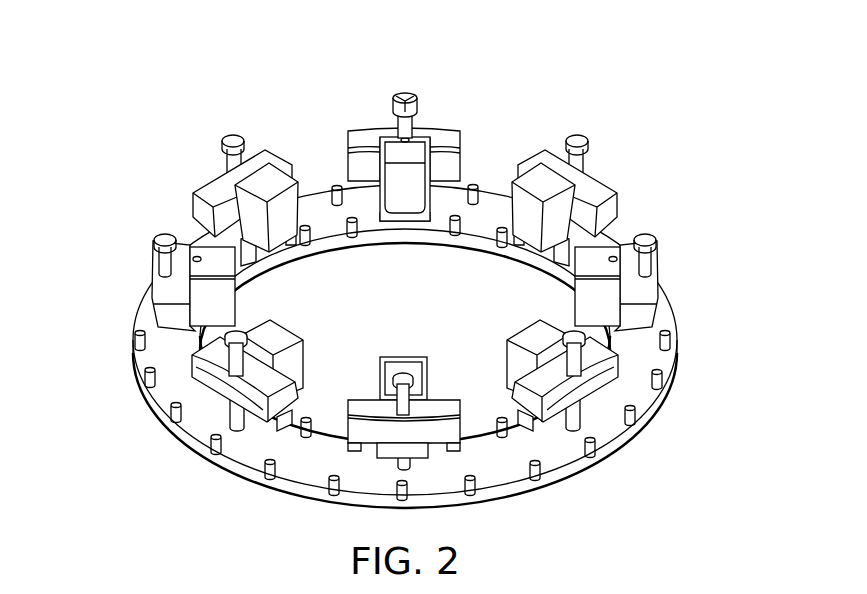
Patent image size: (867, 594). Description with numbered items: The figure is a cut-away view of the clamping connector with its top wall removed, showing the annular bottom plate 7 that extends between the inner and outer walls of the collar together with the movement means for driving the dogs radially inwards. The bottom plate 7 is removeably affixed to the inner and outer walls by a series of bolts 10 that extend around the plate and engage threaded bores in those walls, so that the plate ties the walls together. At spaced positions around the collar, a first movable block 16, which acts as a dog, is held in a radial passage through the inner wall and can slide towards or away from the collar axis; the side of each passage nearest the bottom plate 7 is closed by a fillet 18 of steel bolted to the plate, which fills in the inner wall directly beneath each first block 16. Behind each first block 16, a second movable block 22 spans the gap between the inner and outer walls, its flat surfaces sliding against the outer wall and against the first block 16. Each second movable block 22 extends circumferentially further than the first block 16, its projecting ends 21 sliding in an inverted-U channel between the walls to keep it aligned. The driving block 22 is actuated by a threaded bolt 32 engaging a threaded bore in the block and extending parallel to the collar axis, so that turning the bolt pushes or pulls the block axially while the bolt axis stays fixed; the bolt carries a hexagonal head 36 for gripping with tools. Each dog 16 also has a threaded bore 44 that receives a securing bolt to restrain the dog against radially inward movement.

The bottom plate 7 is at (662, 358).
The bolts 10 is at (460, 218).
The first movable block 16 is at (385, 195).
The fillet 18 is at (263, 257).
The projecting ends 21 is at (197, 210).
The second movable block 22 is at (608, 190).
The threaded bolt 32 is at (415, 120).
The hexagonal head 36 is at (405, 93).
The threaded bore 44 is at (260, 173).